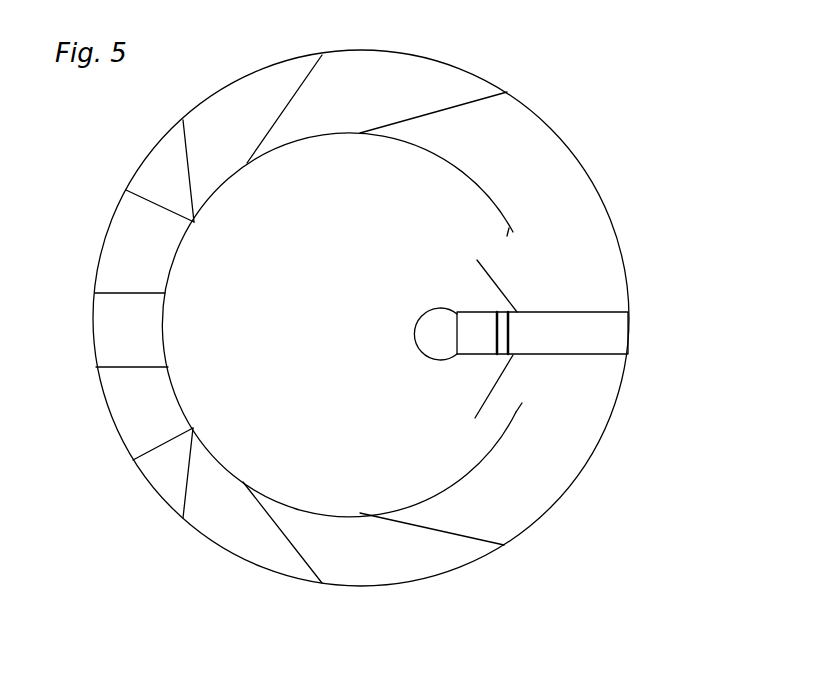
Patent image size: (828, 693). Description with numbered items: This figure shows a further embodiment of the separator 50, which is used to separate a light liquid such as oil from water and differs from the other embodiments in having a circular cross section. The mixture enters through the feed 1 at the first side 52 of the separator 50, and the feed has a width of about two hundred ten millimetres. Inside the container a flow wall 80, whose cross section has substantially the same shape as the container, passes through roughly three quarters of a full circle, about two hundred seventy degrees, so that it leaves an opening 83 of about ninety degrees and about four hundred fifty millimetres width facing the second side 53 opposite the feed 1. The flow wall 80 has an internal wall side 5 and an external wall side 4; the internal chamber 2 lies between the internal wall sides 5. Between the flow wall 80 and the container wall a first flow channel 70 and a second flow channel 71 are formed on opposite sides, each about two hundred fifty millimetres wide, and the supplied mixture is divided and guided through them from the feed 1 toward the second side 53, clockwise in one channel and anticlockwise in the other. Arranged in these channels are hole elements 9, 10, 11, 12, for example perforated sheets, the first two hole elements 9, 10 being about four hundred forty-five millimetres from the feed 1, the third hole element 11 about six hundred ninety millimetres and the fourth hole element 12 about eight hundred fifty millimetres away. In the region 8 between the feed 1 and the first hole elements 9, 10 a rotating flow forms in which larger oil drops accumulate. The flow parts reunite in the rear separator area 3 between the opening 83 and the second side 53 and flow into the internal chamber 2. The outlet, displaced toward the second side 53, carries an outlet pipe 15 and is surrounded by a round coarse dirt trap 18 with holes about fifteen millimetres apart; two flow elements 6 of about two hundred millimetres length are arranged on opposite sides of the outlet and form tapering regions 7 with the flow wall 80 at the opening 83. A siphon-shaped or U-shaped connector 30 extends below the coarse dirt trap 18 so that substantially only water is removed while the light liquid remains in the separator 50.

The feed 1 is at (93, 320).
The internal chamber 2 is at (268, 333).
The rear separator area 3 is at (614, 304).
The external wall side 4 is at (438, 152).
The internal wall side 5 is at (385, 145).
The flow element 6 is at (482, 270).
The tapering region 7 is at (510, 262).
The region 8 is at (152, 254).
The first hole element 9 is at (145, 178).
The first hole element 10 is at (191, 135).
The third hole element 11 is at (295, 81).
The fourth hole element 12 is at (453, 104).
The outlet pipe 15 is at (621, 360).
The coarse dirt trap 18 is at (415, 333).
The connector 30 is at (457, 360).
The separator 50 is at (607, 116).
The first side 52 is at (101, 231).
The second side 53 is at (634, 256).
The first flow channel 70 is at (372, 102).
The second flow channel 71 is at (400, 572).
The flow wall 80 is at (216, 195).
The opening 83 is at (528, 271).